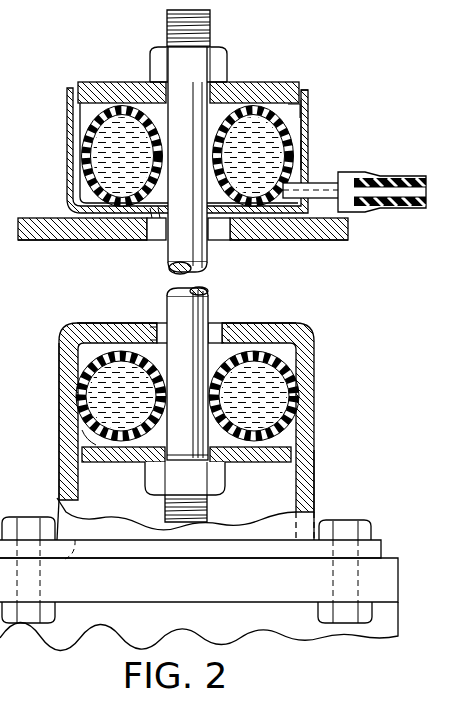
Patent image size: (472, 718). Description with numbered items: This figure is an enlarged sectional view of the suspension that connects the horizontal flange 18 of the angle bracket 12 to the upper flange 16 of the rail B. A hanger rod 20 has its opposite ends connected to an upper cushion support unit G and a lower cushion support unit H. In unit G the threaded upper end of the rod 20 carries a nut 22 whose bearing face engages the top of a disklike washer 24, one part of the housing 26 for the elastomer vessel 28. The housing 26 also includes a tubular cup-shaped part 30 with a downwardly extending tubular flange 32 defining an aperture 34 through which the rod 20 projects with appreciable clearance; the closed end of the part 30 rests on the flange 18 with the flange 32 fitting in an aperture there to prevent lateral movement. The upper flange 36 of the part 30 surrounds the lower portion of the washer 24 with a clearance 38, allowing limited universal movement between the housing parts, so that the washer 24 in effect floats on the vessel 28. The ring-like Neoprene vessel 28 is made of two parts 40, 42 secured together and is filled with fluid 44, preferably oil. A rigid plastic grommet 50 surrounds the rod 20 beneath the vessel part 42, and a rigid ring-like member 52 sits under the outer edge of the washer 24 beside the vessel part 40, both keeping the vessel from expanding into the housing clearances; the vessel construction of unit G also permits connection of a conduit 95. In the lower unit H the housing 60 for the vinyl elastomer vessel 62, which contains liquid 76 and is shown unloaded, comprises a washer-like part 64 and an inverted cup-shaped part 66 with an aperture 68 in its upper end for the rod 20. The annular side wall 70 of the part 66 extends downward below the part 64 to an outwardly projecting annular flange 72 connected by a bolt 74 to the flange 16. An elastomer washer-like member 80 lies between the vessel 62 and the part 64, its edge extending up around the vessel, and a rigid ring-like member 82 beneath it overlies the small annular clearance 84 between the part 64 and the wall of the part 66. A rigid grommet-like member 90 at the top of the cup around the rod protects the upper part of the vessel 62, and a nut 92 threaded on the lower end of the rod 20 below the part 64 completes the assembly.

The angle bracket 12 is at (323, 243).
The upper flange of the rail 16 is at (398, 579).
The horizontal flange 18 is at (50, 241).
The rod 20 is at (170, 270).
The nut 22 is at (215, 45).
The washer 24 is at (240, 82).
The housing 26 is at (110, 80).
The elastomer vessel 28 is at (78, 162).
The tubular cup-shaped part 30 is at (64, 116).
The tubular flange 32 is at (250, 241).
The aperture 34 is at (222, 241).
The flange 36 is at (309, 100).
The clearance 38 is at (304, 89).
The vessel part 40 is at (309, 151).
The vessel part 42 is at (253, 156).
The fluid 44 is at (122, 156).
The grommet 50 is at (158, 241).
The ring-like member 52 is at (303, 120).
The housing 60 is at (308, 324).
The elastomer vessel 62 is at (286, 362).
The washer-like part 64 is at (250, 463).
The cup-shaped part 66 is at (57, 398).
The aperture 68 is at (218, 332).
The annular side wall 70 is at (315, 501).
The annular flange 72 is at (385, 551).
The bolt 74 is at (368, 522).
The liquid 76 is at (88, 364).
The elastomer washer-like member 80 is at (120, 450).
The ring-like member 82 is at (82, 438).
The clearance 84 is at (314, 477).
The grommet-like member 90 is at (115, 343).
The nut 92 is at (226, 492).
The conduit 95 is at (392, 210).
The rail B is at (382, 630).
The upper cushion support unit G is at (342, 129).
The lower cushion support unit H is at (320, 412).